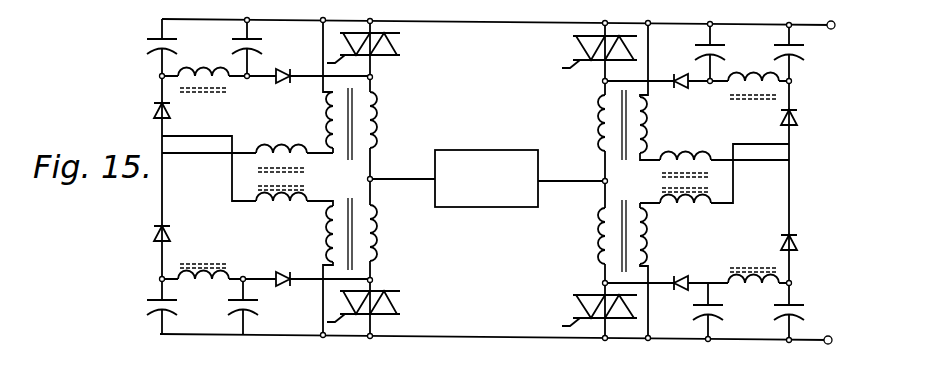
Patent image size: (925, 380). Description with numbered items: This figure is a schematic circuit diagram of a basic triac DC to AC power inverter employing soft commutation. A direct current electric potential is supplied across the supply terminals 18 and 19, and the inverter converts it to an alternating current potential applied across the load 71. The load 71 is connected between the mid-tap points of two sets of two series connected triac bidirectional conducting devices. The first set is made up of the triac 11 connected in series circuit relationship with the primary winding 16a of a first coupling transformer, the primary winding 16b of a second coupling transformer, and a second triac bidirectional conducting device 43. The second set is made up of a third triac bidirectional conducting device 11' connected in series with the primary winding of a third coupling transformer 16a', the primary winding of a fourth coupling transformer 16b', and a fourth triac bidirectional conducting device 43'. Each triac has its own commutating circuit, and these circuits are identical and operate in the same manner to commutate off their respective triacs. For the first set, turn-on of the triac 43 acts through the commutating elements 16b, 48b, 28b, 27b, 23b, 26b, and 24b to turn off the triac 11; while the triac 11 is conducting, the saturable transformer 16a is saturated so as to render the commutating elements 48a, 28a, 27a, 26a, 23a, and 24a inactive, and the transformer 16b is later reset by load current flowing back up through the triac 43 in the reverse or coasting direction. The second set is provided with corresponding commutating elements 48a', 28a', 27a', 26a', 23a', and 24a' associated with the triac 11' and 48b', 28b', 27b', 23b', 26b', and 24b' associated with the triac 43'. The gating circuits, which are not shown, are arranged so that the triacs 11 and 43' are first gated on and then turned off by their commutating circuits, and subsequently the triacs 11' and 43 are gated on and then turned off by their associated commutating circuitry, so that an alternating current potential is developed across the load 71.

The supply terminal 18 is at (510, 25).
The supply terminal 19 is at (484, 337).
The load 71 is at (473, 157).
The triac 11 is at (375, 48).
The second triac bidirectional conducting device 43 is at (377, 306).
The third triac bidirectional conducting device 11' is at (588, 52).
The fourth triac bidirectional conducting device 43' is at (584, 310).
The primary winding of first coupling transformer 16a is at (371, 124).
The primary winding of second coupling transformer 16b is at (371, 234).
The primary winding of third coupling transformer 16a' is at (602, 125).
The primary winding of fourth coupling transformer 16b' is at (598, 236).
The commutating element 23a is at (222, 315).
The commutating element 23b is at (225, 37).
The commutating element 23a' is at (727, 320).
The commutating element 23b' is at (728, 46).
The commutating element 24a is at (291, 297).
The commutating element 24b is at (290, 61).
The commutating element 24a' is at (680, 268).
The commutating element 24b' is at (678, 97).
The commutating element 26a is at (203, 256).
The commutating element 26b is at (203, 92).
The commutating element 26a' is at (753, 264).
The commutating element 26b' is at (750, 97).
The commutating element 27a is at (145, 323).
The commutating element 27b is at (143, 36).
The commutating element 27a' is at (804, 305).
The commutating element 27b' is at (808, 46).
The commutating element 28a is at (141, 236).
The commutating element 28b is at (140, 114).
The commutating element 28a' is at (810, 245).
The commutating element 28b' is at (811, 122).
The commutating element 48a is at (281, 147).
The commutating element 48b is at (281, 211).
The commutating element 48a' is at (685, 151).
The commutating element 48b' is at (685, 212).